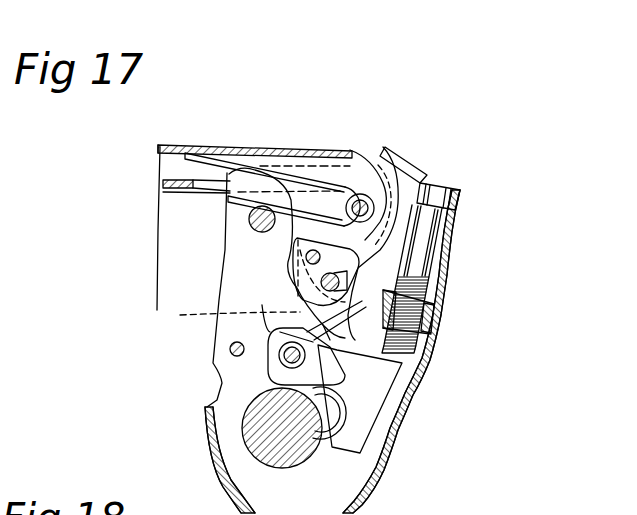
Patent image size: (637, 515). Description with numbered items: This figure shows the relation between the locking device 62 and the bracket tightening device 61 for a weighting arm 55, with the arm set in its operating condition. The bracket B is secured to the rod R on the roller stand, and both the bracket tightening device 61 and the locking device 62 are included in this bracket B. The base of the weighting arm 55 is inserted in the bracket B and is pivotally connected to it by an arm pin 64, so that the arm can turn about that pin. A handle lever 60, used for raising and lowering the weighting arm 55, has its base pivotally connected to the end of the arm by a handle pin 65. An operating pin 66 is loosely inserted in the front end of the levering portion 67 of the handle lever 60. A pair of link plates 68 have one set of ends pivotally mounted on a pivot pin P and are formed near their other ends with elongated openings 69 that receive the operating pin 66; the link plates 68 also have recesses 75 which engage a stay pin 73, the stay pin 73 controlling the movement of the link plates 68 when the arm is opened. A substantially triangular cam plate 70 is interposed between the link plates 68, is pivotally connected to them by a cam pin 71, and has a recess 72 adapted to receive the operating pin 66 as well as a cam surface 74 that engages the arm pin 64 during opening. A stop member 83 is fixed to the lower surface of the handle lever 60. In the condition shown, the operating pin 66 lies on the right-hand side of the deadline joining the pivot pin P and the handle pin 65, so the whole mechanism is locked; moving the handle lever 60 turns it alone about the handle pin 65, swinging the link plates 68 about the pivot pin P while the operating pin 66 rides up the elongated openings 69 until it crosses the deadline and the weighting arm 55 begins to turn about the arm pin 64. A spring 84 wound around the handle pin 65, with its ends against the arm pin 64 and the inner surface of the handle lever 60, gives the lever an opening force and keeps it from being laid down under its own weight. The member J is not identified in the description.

The handle lever 60 is at (205, 146).
The arm pin 64 is at (263, 206).
The spring 84 is at (312, 175).
The handle pin 65 is at (362, 200).
The cam pin 71 is at (342, 276).
The adjusting member J is at (468, 190).
The stop member 83 is at (162, 183).
The weighting arm 55 is at (158, 212).
The link plates 68 is at (273, 280).
The cam plate 70 is at (280, 292).
The recesses 75 is at (267, 307).
The recess 72 is at (321, 279).
The stay pin 73 is at (229, 349).
The pivot pin P is at (279, 358).
The rod R is at (242, 429).
The elongated openings 69 is at (353, 250).
The levering portion 67 is at (380, 253).
The cam surface 74 is at (347, 281).
The locking device 62 is at (364, 300).
The operating pin 66 is at (408, 347).
The bracket B is at (416, 398).
The bracket tightening device 61 is at (378, 434).